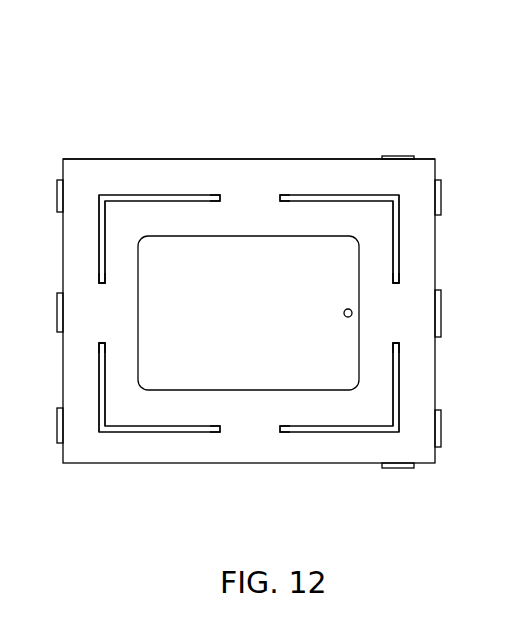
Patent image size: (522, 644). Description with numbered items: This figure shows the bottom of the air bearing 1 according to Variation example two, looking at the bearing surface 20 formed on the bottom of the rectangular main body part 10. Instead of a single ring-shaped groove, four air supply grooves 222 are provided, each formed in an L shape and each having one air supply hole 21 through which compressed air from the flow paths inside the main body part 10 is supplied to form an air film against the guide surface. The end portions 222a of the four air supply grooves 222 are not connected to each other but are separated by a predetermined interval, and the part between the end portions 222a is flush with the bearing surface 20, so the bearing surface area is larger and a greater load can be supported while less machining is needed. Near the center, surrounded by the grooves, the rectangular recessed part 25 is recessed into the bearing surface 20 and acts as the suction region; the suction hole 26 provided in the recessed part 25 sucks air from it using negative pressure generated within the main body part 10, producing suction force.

The air bearing 1 is at (249, 84).
The main body part 10 is at (249, 286).
The bearing surface 20 is at (249, 142).
The air supply hole 21 is at (251, 313).
The air supply groove 222 is at (250, 313).
The end portion 222a is at (249, 313).
The recessed part 25 is at (248, 373).
The suction hole 26 is at (413, 313).